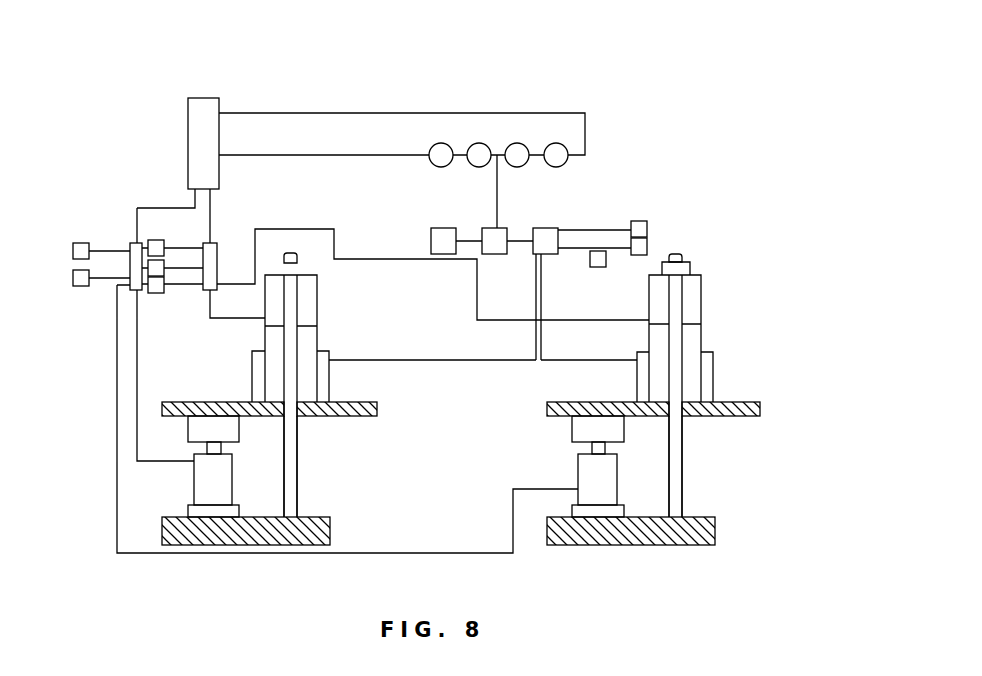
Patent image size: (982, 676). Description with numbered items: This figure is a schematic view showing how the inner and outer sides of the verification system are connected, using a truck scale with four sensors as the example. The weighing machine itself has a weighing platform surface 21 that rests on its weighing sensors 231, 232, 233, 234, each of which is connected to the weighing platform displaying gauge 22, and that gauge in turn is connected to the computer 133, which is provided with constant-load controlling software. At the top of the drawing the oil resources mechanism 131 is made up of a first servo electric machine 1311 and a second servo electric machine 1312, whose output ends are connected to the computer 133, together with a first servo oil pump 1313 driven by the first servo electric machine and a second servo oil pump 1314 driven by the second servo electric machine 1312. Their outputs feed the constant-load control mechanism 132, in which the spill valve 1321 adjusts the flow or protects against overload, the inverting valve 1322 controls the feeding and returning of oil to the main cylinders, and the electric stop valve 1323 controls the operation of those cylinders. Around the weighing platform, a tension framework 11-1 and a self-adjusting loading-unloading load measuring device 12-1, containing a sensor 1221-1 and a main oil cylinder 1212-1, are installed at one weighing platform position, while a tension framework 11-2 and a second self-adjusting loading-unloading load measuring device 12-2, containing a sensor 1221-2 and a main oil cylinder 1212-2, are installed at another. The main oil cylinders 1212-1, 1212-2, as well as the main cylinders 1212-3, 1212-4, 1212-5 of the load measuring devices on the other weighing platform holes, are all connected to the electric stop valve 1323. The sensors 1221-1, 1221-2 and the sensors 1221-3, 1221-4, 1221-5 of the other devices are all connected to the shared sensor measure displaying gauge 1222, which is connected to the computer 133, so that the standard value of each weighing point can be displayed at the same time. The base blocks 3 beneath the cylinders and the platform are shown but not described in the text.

The oil resources mechanism 131 is at (608, 65).
The second servo electric machine 1312 is at (441, 143).
The second servo oil pump 1314 is at (480, 143).
The first servo oil pump 1313 is at (518, 143).
The first servo electric machine 1311 is at (557, 143).
The computer 133 is at (208, 110).
The constant-load control mechanism 132 is at (592, 202).
The spill valve 1321 is at (443, 228).
The inverting valve 1322 is at (495, 238).
The electric stop valve 1323 is at (548, 238).
The main cylinder 1212-3 is at (640, 228).
The main cylinder 1212-4 is at (641, 247).
The main cylinder 1212-5 is at (598, 267).
The weighing platform displaying gauge 22 is at (137, 252).
The sensor 233 is at (72, 250).
The sensor 234 is at (80, 287).
The sensor 1221-3 is at (157, 250).
The sensor 1221-4 is at (158, 268).
The sensor 1221-5 is at (155, 287).
The sensor measure displaying gauge 1222 is at (213, 263).
The self-adjusting loading-unloading load measuring device 12-1 is at (403, 323).
The sensor 1221-1 is at (305, 295).
The main oil cylinder 1212-1 is at (307, 351).
The tension framework 11-1 is at (292, 393).
The self-adjusting loading-unloading load measuring device 12-2 is at (793, 288).
The sensor 1221-2 is at (688, 295).
The main oil cylinder 1212-2 is at (688, 343).
The tension framework 11-2 is at (675, 390).
The weighing platform surface 21 is at (350, 416).
The base 3 is at (308, 527).
The sensor 231 is at (207, 478).
The sensor 232 is at (588, 470).